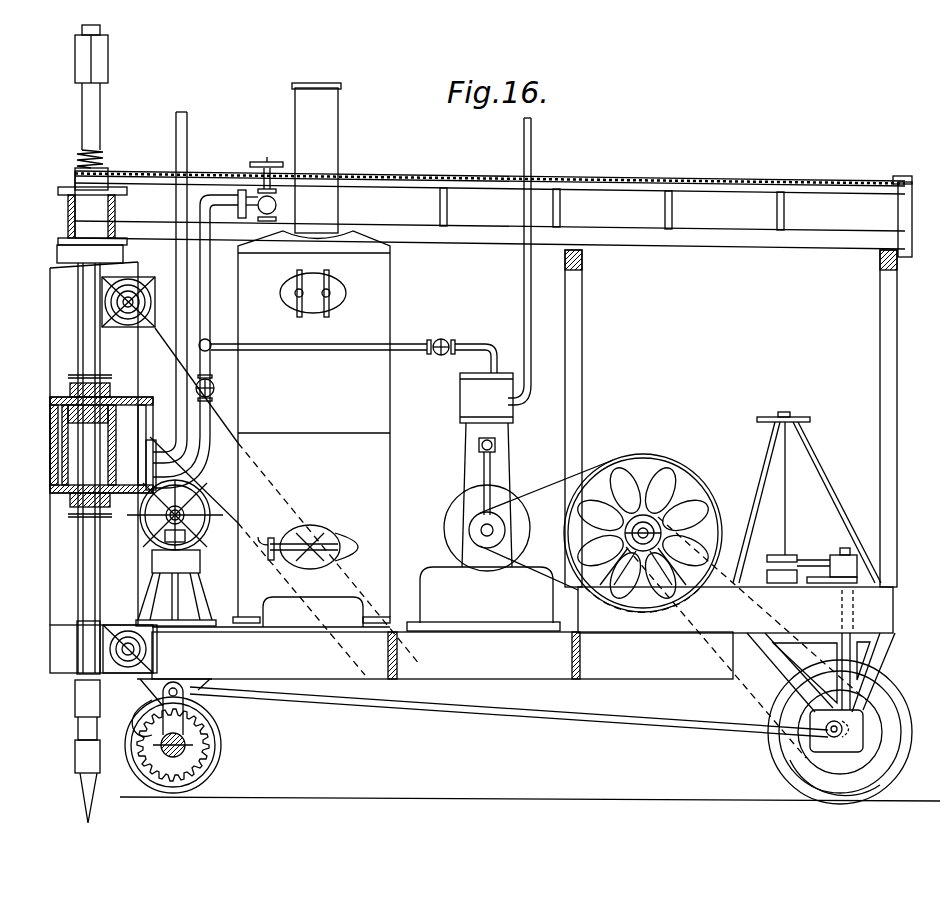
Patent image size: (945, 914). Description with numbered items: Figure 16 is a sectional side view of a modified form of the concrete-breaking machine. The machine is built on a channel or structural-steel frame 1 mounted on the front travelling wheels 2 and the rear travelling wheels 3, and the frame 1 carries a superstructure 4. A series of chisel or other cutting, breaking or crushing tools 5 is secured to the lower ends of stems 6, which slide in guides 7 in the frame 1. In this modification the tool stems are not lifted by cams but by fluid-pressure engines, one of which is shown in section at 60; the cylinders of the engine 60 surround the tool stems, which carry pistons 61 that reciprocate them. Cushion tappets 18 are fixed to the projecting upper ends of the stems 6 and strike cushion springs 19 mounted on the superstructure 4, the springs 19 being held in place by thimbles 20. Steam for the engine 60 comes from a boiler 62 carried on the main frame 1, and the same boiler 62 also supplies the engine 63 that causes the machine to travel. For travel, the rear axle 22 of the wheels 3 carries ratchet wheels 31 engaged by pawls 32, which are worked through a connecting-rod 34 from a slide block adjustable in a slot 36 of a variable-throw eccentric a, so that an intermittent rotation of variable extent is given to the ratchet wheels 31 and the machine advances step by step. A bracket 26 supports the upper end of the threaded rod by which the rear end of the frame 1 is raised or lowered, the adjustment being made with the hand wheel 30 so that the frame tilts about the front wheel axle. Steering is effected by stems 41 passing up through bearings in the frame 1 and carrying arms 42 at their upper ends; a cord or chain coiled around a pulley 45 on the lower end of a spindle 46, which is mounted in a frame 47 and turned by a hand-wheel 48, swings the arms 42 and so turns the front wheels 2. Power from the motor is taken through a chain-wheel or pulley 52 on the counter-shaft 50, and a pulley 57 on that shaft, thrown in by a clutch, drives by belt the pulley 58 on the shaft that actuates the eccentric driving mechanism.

The frame 1 is at (442, 648).
The front travelling wheels 2 is at (903, 762).
The rear travelling wheels 3 is at (218, 730).
The superstructure 4 is at (68, 218).
The chisel or other cutting, breaking or crushing tools 5 is at (73, 777).
The stems 6 is at (92, 596).
The guide 7 is at (75, 648).
The cushion tappets 18 is at (100, 65).
The cushion springs 19 is at (103, 157).
The thimbles 20 is at (75, 179).
The axle of the rear travelling wheels 22 is at (200, 756).
The bracket 26 is at (193, 574).
The hand wheel 30 is at (206, 528).
The ratchet wheels 31 is at (148, 764).
The pawls 32 is at (140, 715).
The connecting-rod 34 is at (450, 716).
The slot 36 is at (856, 762).
The stems 41 is at (842, 606).
The arms 42 is at (834, 560).
The pulley 45 is at (772, 556).
The spindle 46 is at (786, 530).
The frame 47 is at (822, 483).
The hand-wheel 48 is at (812, 421).
The counter-shaft 50 is at (664, 530).
The chain-wheel or pulley 52 is at (672, 470).
The pulley 57 is at (645, 560).
The pulley 58 is at (870, 745).
The fluid pressure engine 60 is at (55, 457).
The pistons 61 is at (66, 413).
The boiler 62 is at (314, 355).
The engine 63 is at (470, 437).
The eccentric a is at (835, 778).